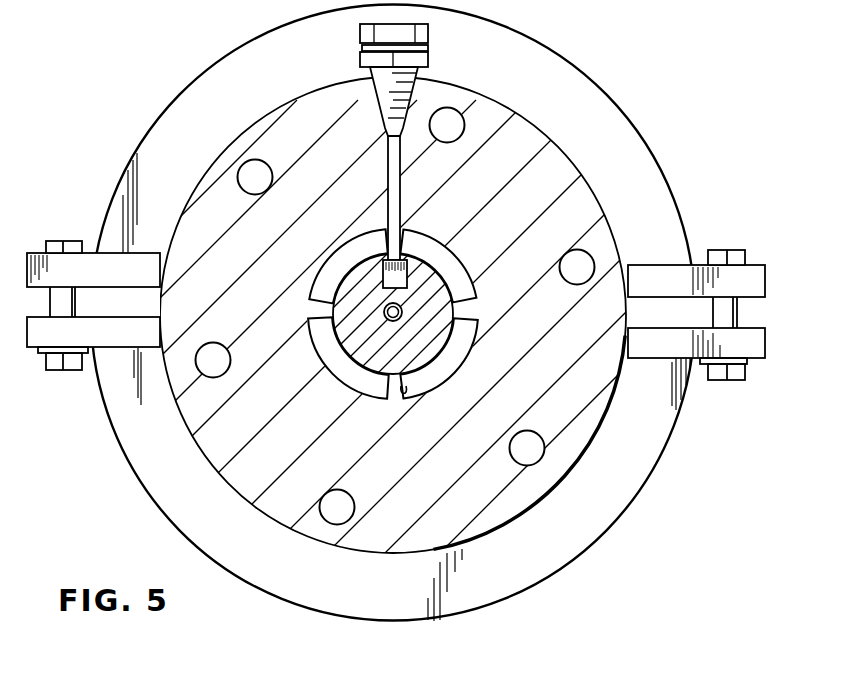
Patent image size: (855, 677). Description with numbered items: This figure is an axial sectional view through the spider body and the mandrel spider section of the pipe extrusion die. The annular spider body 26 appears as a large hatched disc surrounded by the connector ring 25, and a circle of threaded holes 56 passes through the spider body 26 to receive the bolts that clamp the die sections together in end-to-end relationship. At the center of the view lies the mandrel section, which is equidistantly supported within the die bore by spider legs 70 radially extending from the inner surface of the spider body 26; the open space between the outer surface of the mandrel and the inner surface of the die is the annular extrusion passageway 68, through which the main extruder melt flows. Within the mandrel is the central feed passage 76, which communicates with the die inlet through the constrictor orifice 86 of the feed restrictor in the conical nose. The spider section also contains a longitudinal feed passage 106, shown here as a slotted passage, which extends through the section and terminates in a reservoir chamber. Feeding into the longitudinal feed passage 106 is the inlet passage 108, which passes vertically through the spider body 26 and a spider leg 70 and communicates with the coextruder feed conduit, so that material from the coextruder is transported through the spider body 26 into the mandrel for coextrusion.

The connector ring 25 is at (671, 194).
The spider body 26 is at (532, 395).
The threaded holes 56 is at (356, 507).
The annular extrusion passageway 68 is at (345, 372).
The spider legs 70 is at (404, 398).
The central feed passage 76 is at (402, 310).
The constrictor orifice 86 is at (384, 312).
The longitudinal feed passage 106 is at (409, 279).
The inlet passage 108 is at (399, 179).